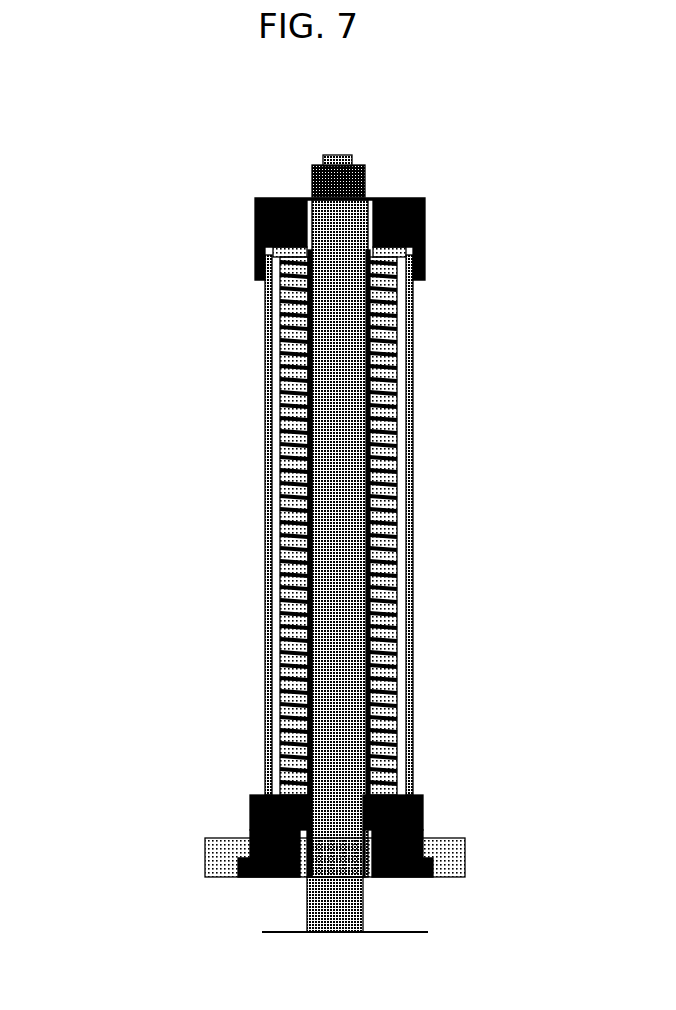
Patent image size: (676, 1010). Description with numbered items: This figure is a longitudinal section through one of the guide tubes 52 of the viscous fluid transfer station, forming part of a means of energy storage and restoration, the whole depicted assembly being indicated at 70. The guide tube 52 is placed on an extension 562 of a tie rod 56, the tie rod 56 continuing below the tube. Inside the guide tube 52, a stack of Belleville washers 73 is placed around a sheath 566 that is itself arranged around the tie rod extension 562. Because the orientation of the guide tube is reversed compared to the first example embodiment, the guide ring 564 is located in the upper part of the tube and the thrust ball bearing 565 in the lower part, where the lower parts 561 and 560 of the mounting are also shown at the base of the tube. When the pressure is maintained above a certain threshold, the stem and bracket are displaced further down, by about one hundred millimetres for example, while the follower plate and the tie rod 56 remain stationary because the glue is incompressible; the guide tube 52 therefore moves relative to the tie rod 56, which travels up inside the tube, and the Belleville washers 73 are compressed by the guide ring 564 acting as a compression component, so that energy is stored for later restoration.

The spring assembly 70 is at (247, 703).
The guide ring 564 is at (283, 248).
The sheath 566 is at (303, 355).
The guide tube 52 is at (267, 507).
The tie rod extension 562 is at (343, 593).
The Belleville washers 73 is at (290, 610).
The thrust ball bearing 565 is at (288, 803).
The lower flange 561 is at (403, 843).
The base plate 560 is at (222, 857).
The tie rod 56 is at (340, 899).